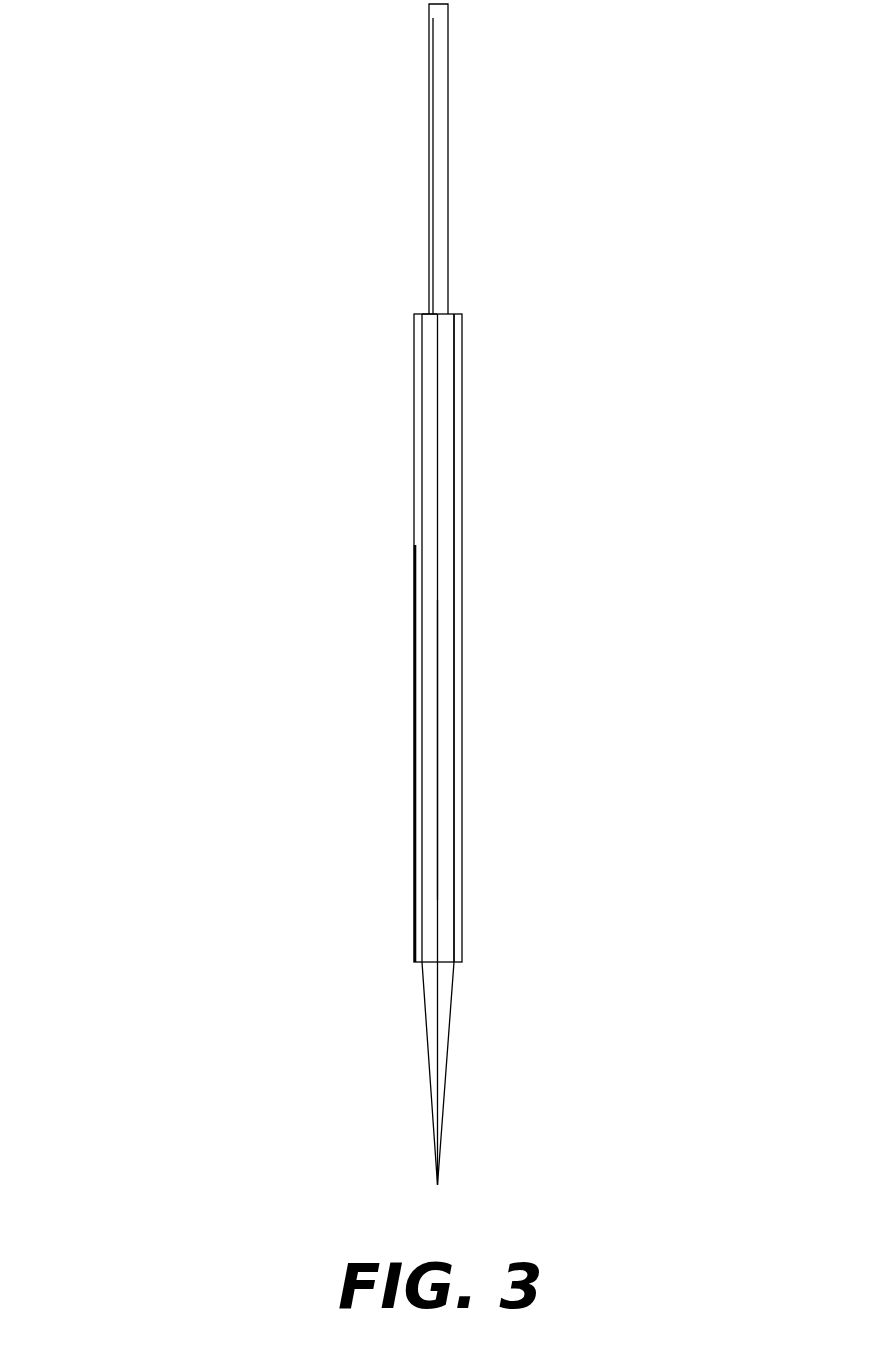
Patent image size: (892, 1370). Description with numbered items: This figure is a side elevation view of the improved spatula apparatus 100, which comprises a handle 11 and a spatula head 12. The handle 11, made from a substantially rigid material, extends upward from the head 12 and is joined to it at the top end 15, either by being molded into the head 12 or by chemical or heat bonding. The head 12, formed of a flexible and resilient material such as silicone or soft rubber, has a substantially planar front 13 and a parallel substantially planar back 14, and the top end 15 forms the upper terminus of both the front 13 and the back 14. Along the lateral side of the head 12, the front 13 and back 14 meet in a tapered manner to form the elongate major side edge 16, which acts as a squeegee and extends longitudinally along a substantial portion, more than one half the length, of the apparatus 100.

The spatula apparatus 100 is at (200, 118).
The handle 11 is at (437, 162).
The spatula head 12 is at (598, 582).
The front 13 is at (461, 496).
The back 14 is at (415, 498).
The top end 15 is at (427, 314).
The elongate major side edge 16 is at (440, 762).